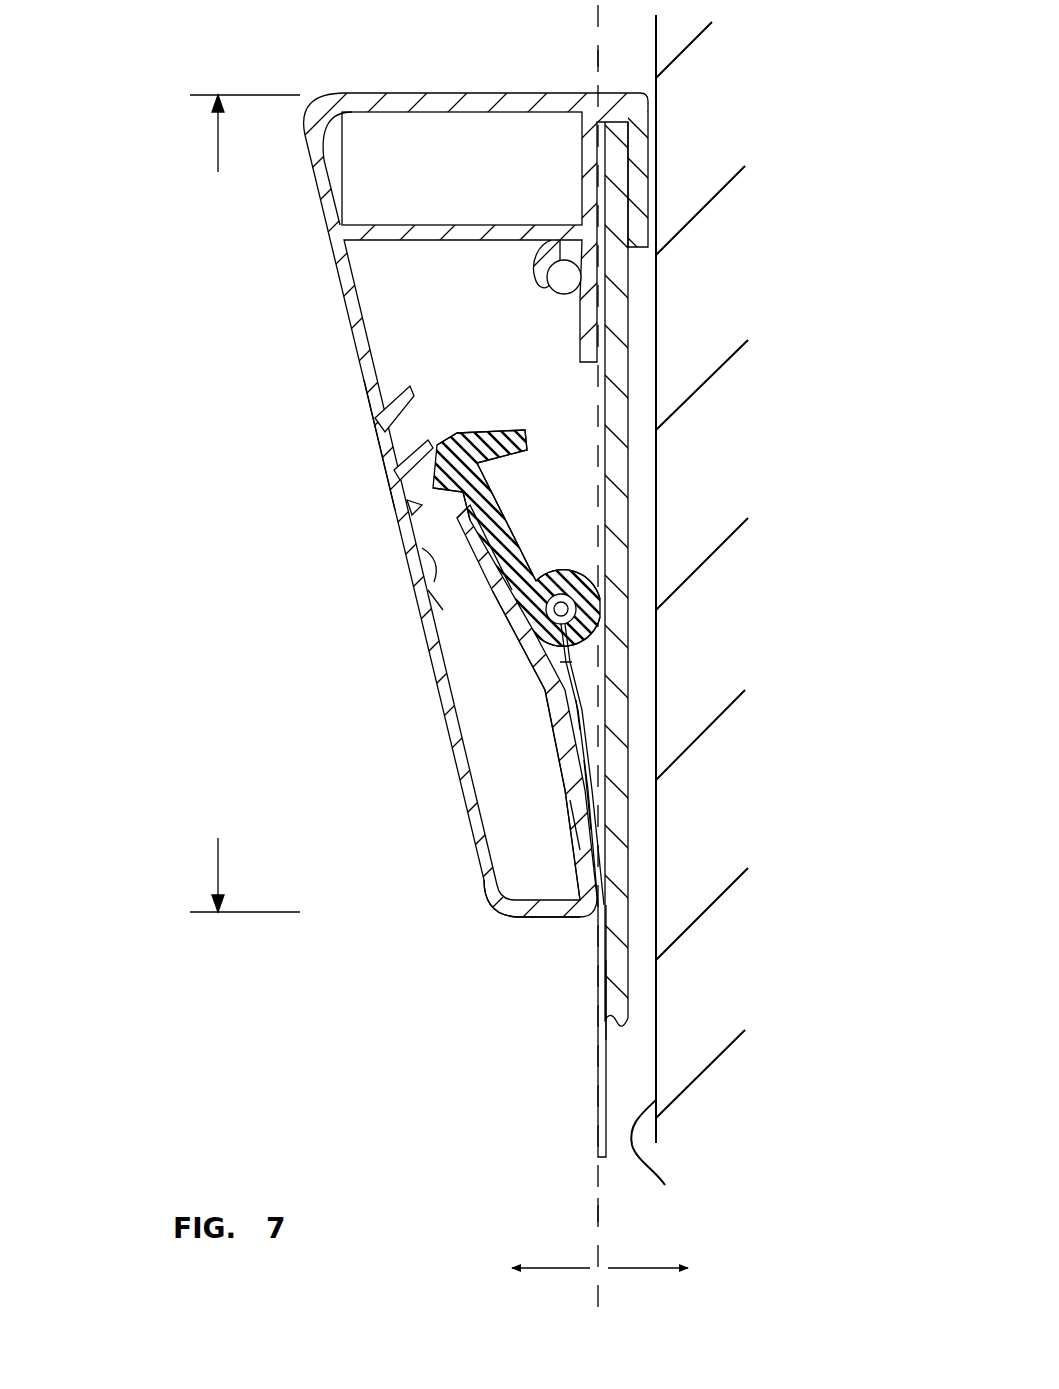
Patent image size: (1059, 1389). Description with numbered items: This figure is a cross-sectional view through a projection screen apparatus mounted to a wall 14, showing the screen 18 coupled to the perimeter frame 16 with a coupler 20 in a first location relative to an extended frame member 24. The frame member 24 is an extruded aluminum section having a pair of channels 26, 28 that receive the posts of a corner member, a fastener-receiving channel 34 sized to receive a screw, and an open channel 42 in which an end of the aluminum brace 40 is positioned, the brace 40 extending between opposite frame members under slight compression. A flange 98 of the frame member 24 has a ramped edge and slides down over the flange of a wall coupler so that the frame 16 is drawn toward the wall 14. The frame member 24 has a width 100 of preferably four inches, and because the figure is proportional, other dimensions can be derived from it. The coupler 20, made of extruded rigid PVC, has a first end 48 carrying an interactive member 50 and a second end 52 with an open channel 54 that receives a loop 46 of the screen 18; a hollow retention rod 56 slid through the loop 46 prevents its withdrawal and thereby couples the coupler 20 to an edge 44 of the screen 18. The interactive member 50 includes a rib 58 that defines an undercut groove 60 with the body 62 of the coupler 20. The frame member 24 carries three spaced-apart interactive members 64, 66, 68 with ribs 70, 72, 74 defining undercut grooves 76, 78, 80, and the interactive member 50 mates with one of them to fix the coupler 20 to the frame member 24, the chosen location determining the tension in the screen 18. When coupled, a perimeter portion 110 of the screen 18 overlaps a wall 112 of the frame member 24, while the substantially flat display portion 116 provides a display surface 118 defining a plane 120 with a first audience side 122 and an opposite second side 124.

The wall 14 is at (689, 616).
The perimeter frame 16 is at (335, 82).
The projection screen 18 is at (552, 1143).
The coupler 20 is at (567, 497).
The extended frame member 24 is at (440, 838).
The channel 26 is at (445, 145).
The channel 28 is at (485, 712).
The fastener-receiving channel 34 is at (545, 298).
The brace 40 is at (648, 865).
The open channel 42 is at (633, 258).
The edge 44 is at (586, 677).
The loop 46 is at (552, 680).
The first end 48 is at (555, 415).
The interactive member 50 is at (432, 488).
The second end 52 is at (612, 590).
The open channel 54 is at (590, 655).
The retention rod 56 is at (547, 618).
The rib 58 is at (457, 522).
The undercut groove 60 is at (457, 503).
The body 62 is at (495, 528).
The interactive member 64 is at (428, 560).
The interactive member 66 is at (430, 440).
The interactive member 68 is at (375, 415).
The rib 70 is at (430, 556).
The rib 72 is at (432, 430).
The rib 74 is at (395, 420).
The undercut groove 76 is at (418, 507).
The undercut groove 78 is at (390, 436).
The undercut groove 80 is at (380, 345).
The flange 98 is at (640, 170).
The width 100 is at (216, 850).
The perimeter portion 110 is at (588, 800).
The wall 112 is at (578, 823).
The display portion 116 is at (597, 1058).
The display surface 118 is at (597, 1002).
The plane 120 is at (597, 62).
The first audience side 122 is at (560, 1270).
The second side 124 is at (640, 1270).